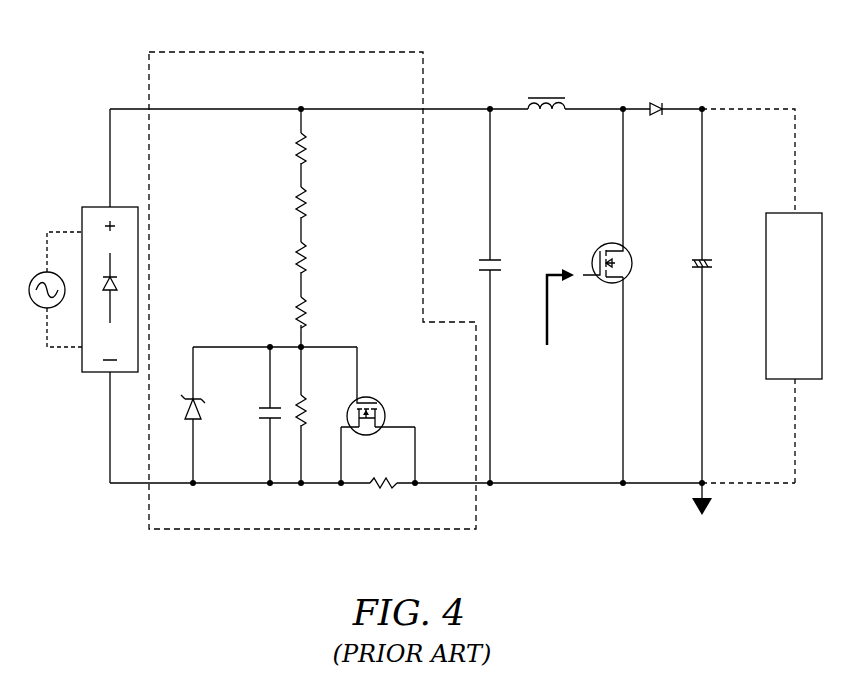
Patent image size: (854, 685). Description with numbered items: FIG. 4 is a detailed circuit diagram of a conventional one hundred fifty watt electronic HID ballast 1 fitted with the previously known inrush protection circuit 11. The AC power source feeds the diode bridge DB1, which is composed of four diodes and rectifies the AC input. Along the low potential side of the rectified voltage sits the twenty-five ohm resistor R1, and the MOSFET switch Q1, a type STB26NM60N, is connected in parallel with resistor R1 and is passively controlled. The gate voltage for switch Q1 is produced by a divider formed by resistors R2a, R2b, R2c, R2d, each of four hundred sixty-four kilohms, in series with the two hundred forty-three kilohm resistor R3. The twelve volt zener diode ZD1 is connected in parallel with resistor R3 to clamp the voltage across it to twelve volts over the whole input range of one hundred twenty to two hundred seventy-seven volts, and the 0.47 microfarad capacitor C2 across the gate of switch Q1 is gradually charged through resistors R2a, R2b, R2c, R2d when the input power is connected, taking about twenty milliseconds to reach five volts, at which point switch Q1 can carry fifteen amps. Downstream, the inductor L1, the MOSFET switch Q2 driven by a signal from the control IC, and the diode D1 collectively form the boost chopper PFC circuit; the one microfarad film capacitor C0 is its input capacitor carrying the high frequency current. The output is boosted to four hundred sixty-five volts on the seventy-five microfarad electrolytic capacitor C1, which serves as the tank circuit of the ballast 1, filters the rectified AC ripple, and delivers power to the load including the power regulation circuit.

The ballast 1 is at (108, 60).
The inrush protection circuit 11 is at (270, 52).
The diode bridge DB1 is at (103, 277).
The resistor R2a is at (274, 151).
The resistor R2b is at (274, 204).
The resistor R2c is at (274, 259).
The resistor R2d is at (274, 314).
The zener diode ZD1 is at (178, 415).
The capacitor C2 is at (244, 415).
The resistor R3 is at (320, 415).
The MOSFET switch Q1 is at (405, 415).
The resistor R1 is at (381, 498).
The film capacitor C0 is at (513, 296).
The inductor L1 is at (546, 121).
The diode D1 is at (653, 123).
The MOSFET switch Q2 is at (602, 296).
The electrolytic capacitor C1 is at (718, 296).